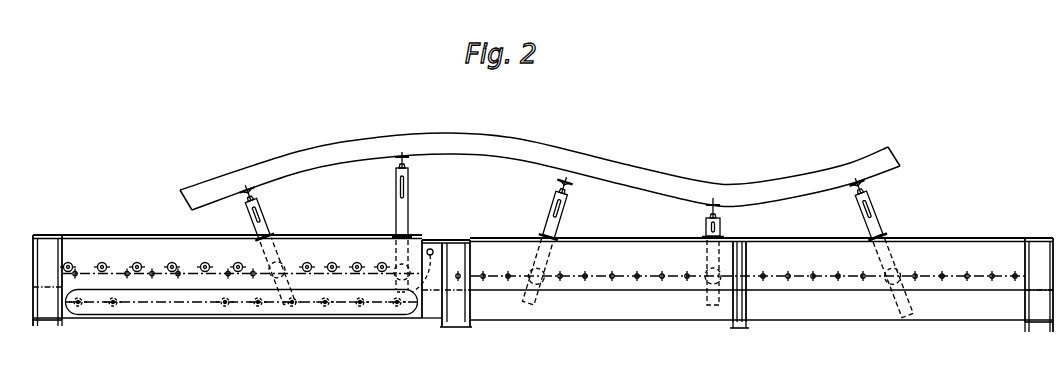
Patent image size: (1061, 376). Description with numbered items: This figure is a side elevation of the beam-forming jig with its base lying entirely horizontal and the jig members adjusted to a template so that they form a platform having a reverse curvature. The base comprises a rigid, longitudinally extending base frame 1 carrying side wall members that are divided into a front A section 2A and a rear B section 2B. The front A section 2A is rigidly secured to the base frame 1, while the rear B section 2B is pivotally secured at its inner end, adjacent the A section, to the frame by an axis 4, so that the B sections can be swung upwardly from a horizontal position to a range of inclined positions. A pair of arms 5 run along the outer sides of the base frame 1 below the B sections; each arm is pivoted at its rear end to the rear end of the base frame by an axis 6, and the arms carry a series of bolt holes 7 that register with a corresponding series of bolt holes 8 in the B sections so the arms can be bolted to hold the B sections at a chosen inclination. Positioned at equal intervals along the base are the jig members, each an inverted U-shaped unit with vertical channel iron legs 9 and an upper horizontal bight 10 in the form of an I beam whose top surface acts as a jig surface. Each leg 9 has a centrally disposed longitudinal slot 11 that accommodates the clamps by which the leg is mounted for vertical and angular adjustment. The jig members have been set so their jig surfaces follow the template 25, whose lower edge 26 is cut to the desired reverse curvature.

The base frame 1 is at (543, 279).
The front A section 2A is at (761, 274).
The rear B section 2B is at (227, 269).
The axis 4 is at (442, 271).
The arm 5 is at (242, 318).
The axis 6 is at (85, 321).
The bolt holes 7 is at (282, 321).
The bolt holes 8 is at (225, 246).
The channel iron leg 9 is at (410, 200).
The upper horizontal bight 10 is at (253, 191).
The longitudinal slot 11 is at (400, 220).
The template 25 is at (540, 164).
The lower edge 26 is at (546, 182).